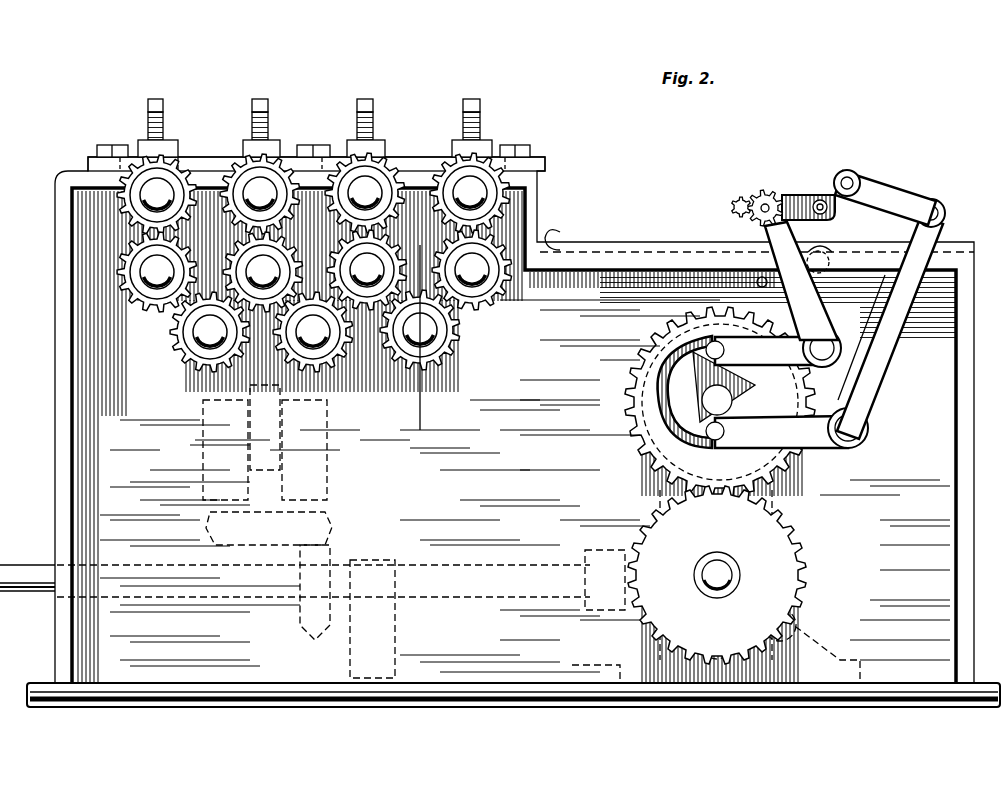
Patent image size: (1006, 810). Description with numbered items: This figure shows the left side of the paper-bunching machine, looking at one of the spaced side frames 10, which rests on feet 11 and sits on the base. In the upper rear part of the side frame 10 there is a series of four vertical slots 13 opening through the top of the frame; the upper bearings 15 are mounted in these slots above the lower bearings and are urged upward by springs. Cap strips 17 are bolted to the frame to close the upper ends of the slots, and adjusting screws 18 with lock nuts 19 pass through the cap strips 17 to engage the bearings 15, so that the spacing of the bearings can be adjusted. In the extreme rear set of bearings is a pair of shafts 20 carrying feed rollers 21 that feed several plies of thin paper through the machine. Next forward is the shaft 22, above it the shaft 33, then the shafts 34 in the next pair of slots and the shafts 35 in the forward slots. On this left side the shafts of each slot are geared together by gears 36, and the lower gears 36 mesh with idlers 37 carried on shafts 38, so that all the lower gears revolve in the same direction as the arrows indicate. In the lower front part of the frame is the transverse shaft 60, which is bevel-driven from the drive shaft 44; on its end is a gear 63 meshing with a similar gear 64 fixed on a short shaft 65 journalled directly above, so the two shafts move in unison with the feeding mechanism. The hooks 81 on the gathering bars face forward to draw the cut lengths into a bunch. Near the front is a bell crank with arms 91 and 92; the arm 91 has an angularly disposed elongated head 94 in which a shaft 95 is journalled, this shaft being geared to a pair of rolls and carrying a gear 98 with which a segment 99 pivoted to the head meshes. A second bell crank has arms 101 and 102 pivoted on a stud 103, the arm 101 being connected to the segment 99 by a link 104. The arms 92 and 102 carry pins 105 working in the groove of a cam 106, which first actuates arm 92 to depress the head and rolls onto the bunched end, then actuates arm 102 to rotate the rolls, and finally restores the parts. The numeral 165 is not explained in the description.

The side frame 10 is at (419, 347).
The foot 11 is at (830, 708).
The vertical slot 13 is at (505, 228).
The upper bearing 15 is at (150, 232).
The cap strip 17 is at (537, 160).
The adjusting screw 18 is at (250, 106).
The lock nut 19 is at (173, 146).
The shaft 20 is at (157, 272).
The feed roller 21 is at (157, 195).
The shaft 22 is at (265, 330).
The shaft 33 is at (265, 190).
The shaft 34 is at (368, 270).
The shaft 35 is at (473, 192).
The gear 36 is at (118, 180).
The idler gear 37 is at (325, 360).
The shaft 38 is at (430, 334).
The drive shaft 44 is at (27, 575).
The transverse shaft 60 is at (722, 575).
The gear 63 is at (778, 528).
The gear 64 is at (660, 468).
The short shaft 65 is at (705, 405).
The hook 81 is at (688, 252).
The bell crank arm 91 is at (815, 325).
The bell crank arm 92 is at (785, 338).
The elongated head 94 is at (833, 222).
The shaft 95 is at (740, 203).
The gear 98 is at (767, 196).
The segment 99 is at (838, 176).
The bell crank arm 101 is at (893, 348).
The bell crank arm 102 is at (840, 448).
The stud 103 is at (950, 525).
The link 104 is at (893, 200).
The pin 105 is at (705, 432).
The cam 106 is at (665, 378).
The cam disk 165 is at (670, 345).